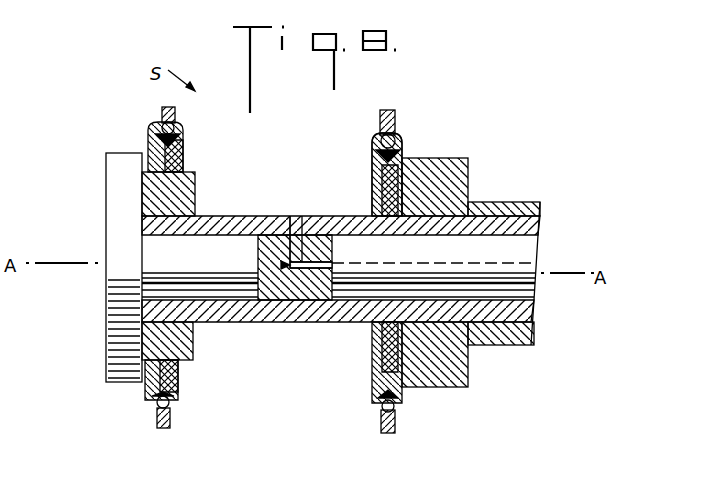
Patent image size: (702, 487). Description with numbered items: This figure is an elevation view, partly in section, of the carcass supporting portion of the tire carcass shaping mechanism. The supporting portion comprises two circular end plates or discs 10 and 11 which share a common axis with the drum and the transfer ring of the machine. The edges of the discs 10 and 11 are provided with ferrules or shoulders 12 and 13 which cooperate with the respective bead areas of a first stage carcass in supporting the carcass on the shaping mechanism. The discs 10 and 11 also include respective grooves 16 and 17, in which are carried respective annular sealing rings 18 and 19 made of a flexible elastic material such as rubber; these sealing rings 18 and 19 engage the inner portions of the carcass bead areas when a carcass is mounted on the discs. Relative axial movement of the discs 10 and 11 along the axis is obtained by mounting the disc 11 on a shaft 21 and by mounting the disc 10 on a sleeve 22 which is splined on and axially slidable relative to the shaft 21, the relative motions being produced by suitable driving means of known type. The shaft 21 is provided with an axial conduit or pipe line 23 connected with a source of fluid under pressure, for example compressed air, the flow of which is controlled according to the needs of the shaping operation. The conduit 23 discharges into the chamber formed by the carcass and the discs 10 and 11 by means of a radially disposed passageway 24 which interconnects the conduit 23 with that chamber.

The circular end plate or disc 10 is at (375, 158).
The circular end plate or disc 11 is at (184, 145).
The ferrule or shoulder 12 is at (382, 112).
The ferrule or shoulder 13 is at (168, 108).
The groove 16 is at (402, 142).
The groove 17 is at (156, 136).
The annular sealing ring 18 is at (381, 140).
The annular sealing ring 19 is at (161, 126).
The shaft 21 is at (281, 325).
The sleeve 22 is at (512, 205).
The axial conduit or pipe line 23 is at (317, 268).
The radially disposed passageway 24 is at (296, 215).